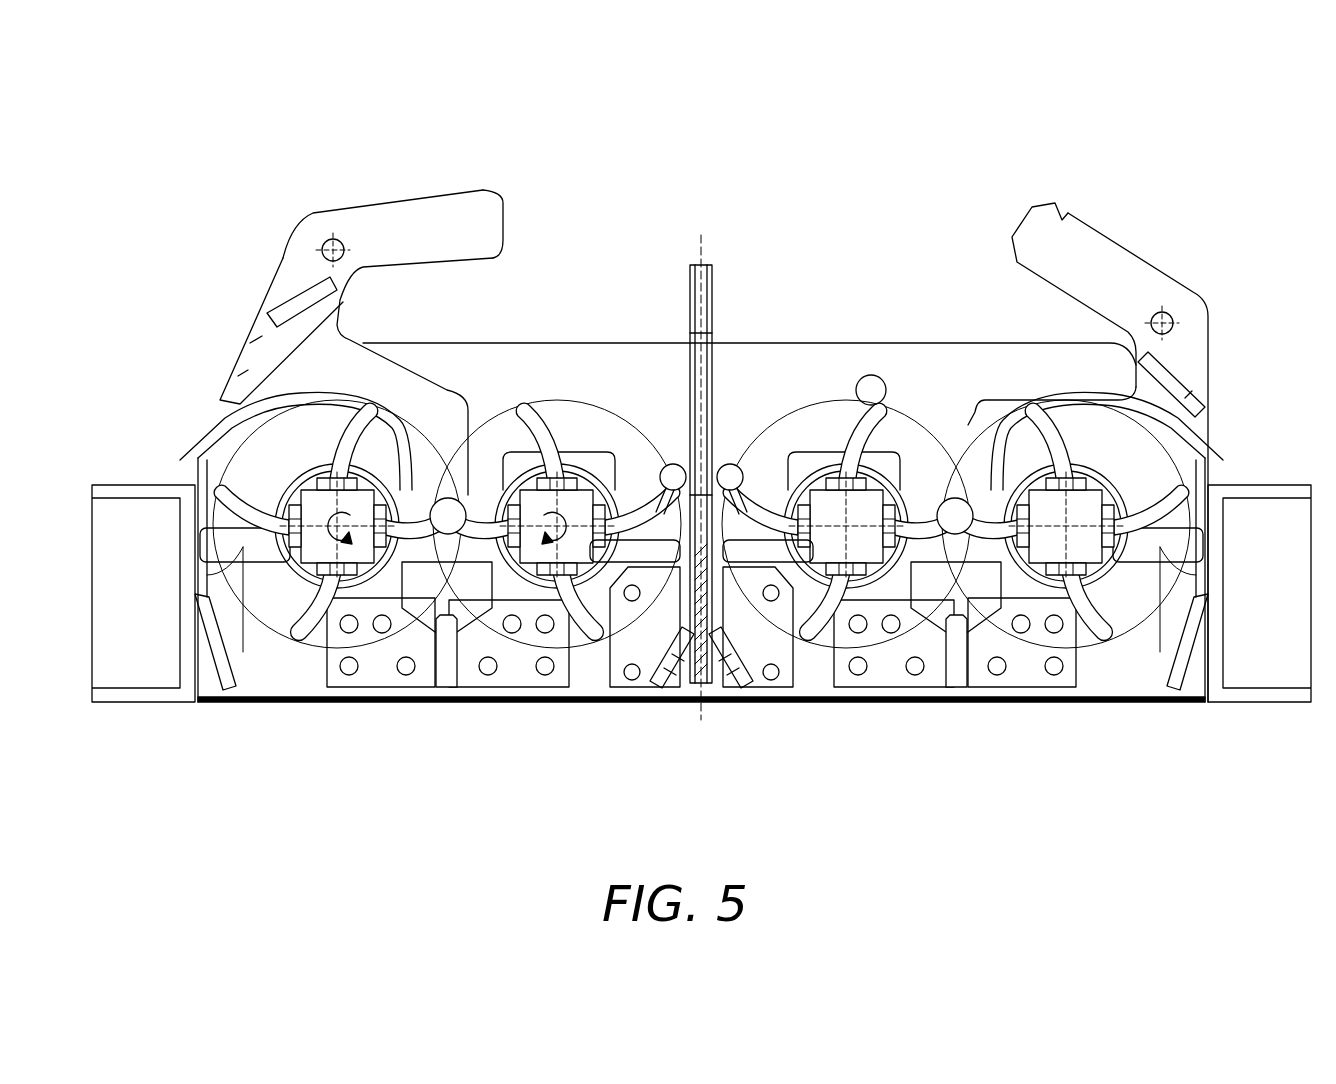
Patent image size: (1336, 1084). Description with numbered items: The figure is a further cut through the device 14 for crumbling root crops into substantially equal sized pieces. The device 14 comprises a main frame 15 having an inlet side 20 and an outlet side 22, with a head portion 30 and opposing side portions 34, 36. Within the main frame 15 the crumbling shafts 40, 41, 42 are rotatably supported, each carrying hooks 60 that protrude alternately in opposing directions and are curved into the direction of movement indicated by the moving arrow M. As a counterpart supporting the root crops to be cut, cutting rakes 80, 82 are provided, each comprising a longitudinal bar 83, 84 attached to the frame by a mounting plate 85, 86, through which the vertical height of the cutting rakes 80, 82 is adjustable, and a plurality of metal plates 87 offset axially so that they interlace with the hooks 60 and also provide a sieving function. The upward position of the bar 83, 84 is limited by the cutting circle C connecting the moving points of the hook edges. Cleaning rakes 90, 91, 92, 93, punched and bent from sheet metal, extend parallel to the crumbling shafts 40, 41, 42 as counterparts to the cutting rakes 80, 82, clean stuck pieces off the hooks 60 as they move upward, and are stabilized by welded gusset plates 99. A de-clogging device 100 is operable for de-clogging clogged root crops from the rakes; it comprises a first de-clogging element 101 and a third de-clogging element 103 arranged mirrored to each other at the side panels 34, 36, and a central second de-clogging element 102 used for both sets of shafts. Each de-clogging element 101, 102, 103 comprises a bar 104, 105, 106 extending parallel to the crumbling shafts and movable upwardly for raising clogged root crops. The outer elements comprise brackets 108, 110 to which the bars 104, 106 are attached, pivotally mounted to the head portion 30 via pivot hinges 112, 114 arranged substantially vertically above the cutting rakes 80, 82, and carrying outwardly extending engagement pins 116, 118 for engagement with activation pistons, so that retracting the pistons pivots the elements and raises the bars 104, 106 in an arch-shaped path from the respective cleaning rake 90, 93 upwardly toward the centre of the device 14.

The device for crumbling root crops 14 is at (215, 131).
The main frame 15 is at (200, 438).
The inlet side 20 is at (934, 185).
The outlet side 22 is at (558, 788).
The first head portion 30 is at (990, 343).
The first side portion 34 is at (128, 485).
The second side portion 36 is at (1275, 485).
The crumbling shaft 40 is at (305, 578).
The crumbling shaft 41 is at (577, 567).
The crumbling shaft 42 is at (823, 552).
The hook 60 is at (530, 408).
The cutting rake 80 is at (446, 672).
The cutting rake 82 is at (957, 672).
The longitudinal bar 83 is at (417, 668).
The longitudinal bar 84 is at (986, 668).
The mounting plate 85 is at (372, 666).
The mounting plate 86 is at (1031, 666).
The metal plate 87 is at (470, 625).
The cleaning rake 90 is at (237, 570).
The cleaning rake 91 is at (680, 535).
The cleaning rake 92 is at (730, 535).
The cleaning rake 93 is at (1168, 570).
The gusset plate 99 is at (238, 616).
The de-clogging device 100 is at (403, 196).
The first de-clogging element 101 is at (282, 260).
The second de-clogging element 102 is at (705, 262).
The third de-clogging element 103 is at (1128, 246).
The bar 104 is at (245, 362).
The bar 105 is at (708, 676).
The bar 106 is at (1200, 432).
The bracket 108 is at (453, 203).
The bracket 110 is at (1063, 213).
The pivot hinge 112 is at (447, 497).
The pivot hinge 114 is at (952, 497).
The engagement pin 116 is at (330, 245).
The engagement pin 118 is at (1170, 316).
The moving arrow M is at (566, 495).
The cutting circle C is at (610, 412).